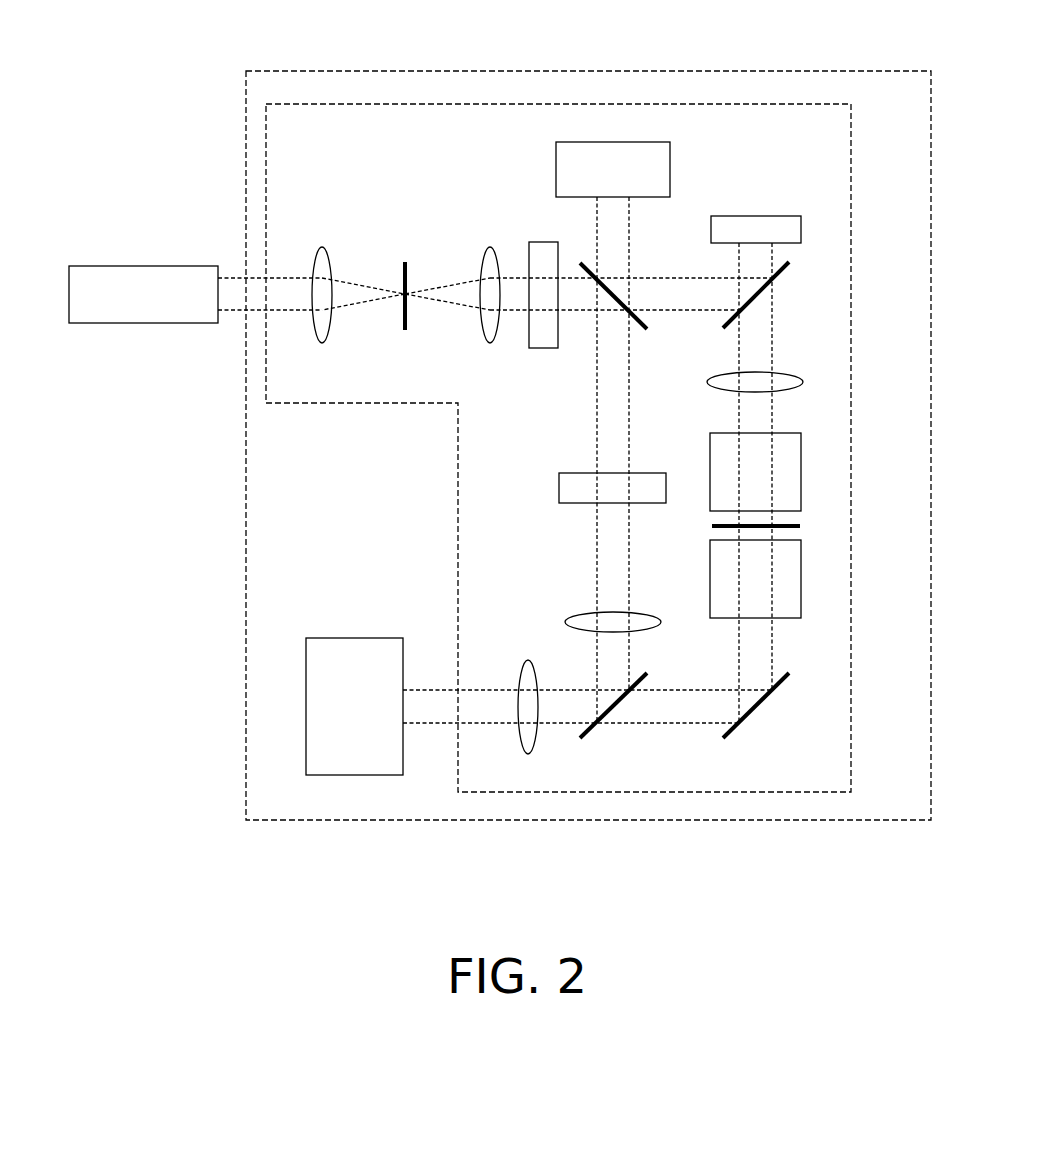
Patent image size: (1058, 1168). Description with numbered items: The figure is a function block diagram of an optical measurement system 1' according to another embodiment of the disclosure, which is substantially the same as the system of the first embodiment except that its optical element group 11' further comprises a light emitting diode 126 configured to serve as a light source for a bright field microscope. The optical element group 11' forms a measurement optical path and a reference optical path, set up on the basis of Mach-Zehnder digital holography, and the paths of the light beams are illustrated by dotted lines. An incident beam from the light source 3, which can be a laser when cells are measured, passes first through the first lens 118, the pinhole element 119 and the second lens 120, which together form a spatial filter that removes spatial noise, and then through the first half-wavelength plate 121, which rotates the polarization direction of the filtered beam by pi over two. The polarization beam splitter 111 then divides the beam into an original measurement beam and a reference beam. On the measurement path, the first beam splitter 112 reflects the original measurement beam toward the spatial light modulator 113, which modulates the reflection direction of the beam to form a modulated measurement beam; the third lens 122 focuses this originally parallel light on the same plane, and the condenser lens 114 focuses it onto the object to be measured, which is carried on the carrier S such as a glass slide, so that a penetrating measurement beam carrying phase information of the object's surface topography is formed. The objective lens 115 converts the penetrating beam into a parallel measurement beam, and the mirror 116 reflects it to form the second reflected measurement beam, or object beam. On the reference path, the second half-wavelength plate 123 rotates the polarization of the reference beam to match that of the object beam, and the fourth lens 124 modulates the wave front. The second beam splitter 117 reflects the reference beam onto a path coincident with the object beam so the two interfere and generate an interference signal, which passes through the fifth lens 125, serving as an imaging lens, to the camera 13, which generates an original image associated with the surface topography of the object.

The optical measurement system 1' is at (588, 411).
The optical element group 11' is at (594, 448).
The light source 3 is at (143, 266).
The camera 13 is at (355, 638).
The first lens 118 is at (318, 265).
The pinhole element 119 is at (403, 285).
The second lens 120 is at (483, 265).
The first half-wavelength plate 121 is at (542, 242).
The light emitting diode 126 is at (670, 167).
The polarization beam splitter 111 is at (613, 293).
The spatial light modulator 113 is at (755, 216).
The first beam splitter 112 is at (783, 270).
The third lens 122 is at (728, 373).
The condenser lens 114 is at (710, 470).
The carrier S is at (717, 528).
The objective lens 115 is at (710, 597).
The second half-wavelength plate 123 is at (583, 473).
The fourth lens 124 is at (583, 612).
The fifth lens 125 is at (518, 675).
The second beam splitter 117 is at (587, 738).
The mirror 116 is at (760, 705).